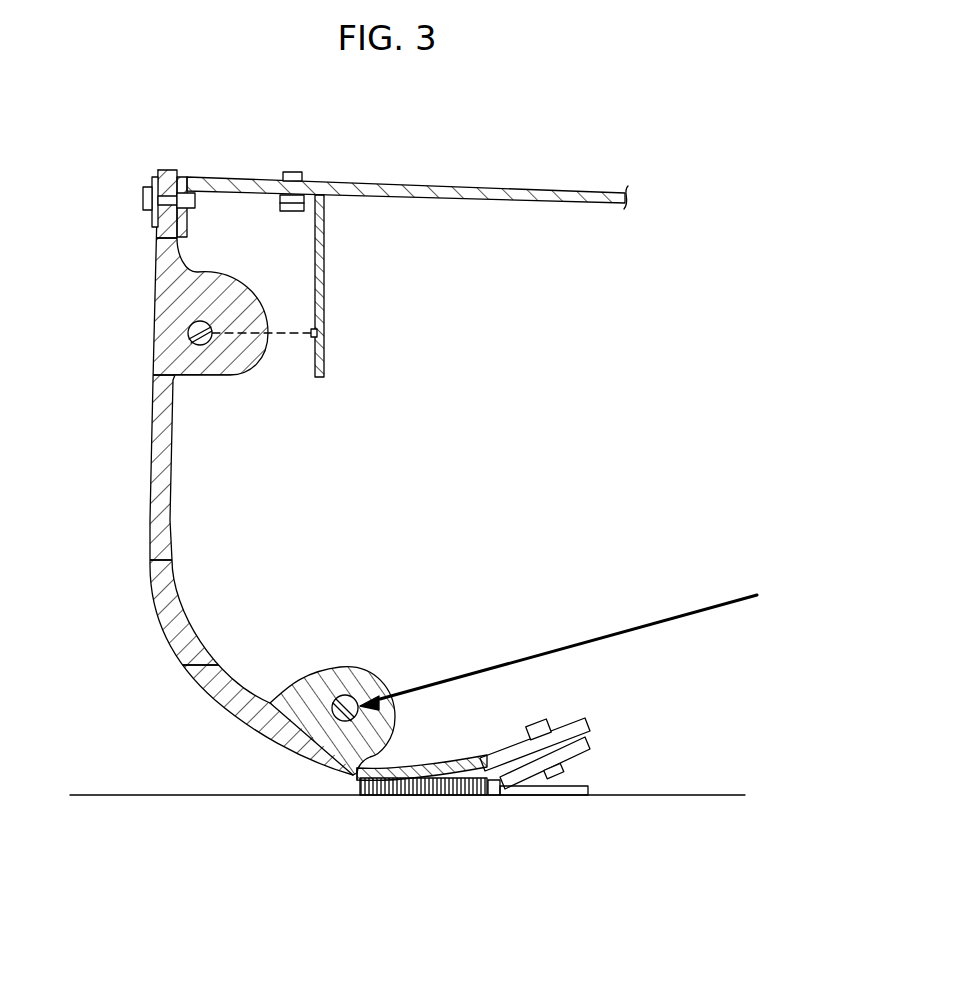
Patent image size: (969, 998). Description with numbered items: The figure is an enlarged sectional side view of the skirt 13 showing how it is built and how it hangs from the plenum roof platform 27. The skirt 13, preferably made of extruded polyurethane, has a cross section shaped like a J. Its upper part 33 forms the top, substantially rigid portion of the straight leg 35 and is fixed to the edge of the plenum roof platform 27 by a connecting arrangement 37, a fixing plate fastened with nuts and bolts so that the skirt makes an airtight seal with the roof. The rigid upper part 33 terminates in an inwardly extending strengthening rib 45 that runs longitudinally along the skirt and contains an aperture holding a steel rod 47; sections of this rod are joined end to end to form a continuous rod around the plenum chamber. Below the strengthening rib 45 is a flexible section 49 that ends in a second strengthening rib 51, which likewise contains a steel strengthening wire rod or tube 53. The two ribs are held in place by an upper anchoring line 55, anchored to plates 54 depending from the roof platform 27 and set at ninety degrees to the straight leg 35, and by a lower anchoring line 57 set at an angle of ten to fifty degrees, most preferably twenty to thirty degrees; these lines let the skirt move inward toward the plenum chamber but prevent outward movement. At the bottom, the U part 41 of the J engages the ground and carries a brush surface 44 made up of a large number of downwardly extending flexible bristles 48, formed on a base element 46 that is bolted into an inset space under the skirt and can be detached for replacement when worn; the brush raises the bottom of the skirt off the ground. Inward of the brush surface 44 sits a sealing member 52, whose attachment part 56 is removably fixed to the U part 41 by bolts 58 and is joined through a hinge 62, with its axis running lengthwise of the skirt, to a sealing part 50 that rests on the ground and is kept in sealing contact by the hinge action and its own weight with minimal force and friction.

The skirt 13 is at (134, 511).
The plenum roof platform 27 is at (347, 186).
The upper part 33 is at (167, 233).
The straight leg 35 is at (152, 430).
The connecting arrangement 37 is at (143, 198).
The U part 41 is at (180, 652).
The brush surface 44 is at (473, 797).
The strengthening rib 45 is at (200, 283).
The base element 46 is at (356, 778).
The rod 47 is at (201, 345).
The bristles 48 is at (415, 773).
The flexible section 49 is at (150, 583).
The sealing part 50 is at (533, 796).
The second strengthening rib 51 is at (323, 677).
The sealing member 52 is at (614, 756).
The strengthening wire rod or tube 53 is at (360, 700).
The plates 54 is at (324, 298).
The upper anchoring line 55 is at (295, 338).
The attachment part 56 is at (573, 752).
The lower anchoring line 57 is at (508, 663).
The bolts 58 is at (552, 768).
The hinge 62 is at (498, 797).